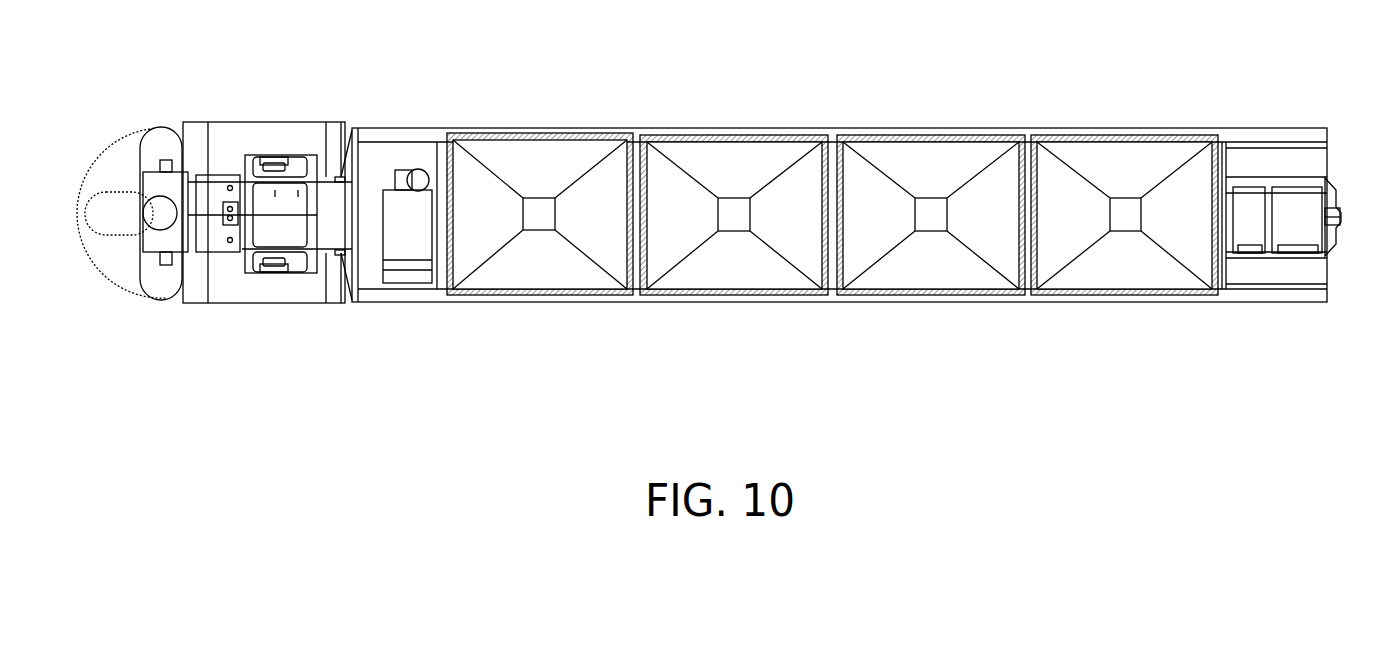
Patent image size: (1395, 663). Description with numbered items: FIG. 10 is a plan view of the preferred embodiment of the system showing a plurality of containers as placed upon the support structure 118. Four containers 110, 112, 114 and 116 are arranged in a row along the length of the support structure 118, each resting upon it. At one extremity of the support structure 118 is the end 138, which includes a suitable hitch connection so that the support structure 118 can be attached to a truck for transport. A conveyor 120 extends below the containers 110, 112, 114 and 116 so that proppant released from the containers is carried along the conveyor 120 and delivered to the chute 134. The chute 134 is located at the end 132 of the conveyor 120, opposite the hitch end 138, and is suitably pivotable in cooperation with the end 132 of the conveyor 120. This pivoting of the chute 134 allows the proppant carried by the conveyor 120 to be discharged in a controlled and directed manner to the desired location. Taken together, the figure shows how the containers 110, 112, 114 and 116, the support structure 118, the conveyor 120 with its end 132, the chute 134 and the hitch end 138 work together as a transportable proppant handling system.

The container 110 is at (532, 155).
The container 112 is at (720, 162).
The container 114 is at (915, 165).
The container 116 is at (1105, 165).
The support structure 118 is at (1280, 137).
The conveyor 120 is at (222, 175).
The end of the conveyor 132 is at (140, 182).
The chute 134 is at (93, 203).
The end 138 is at (1343, 217).